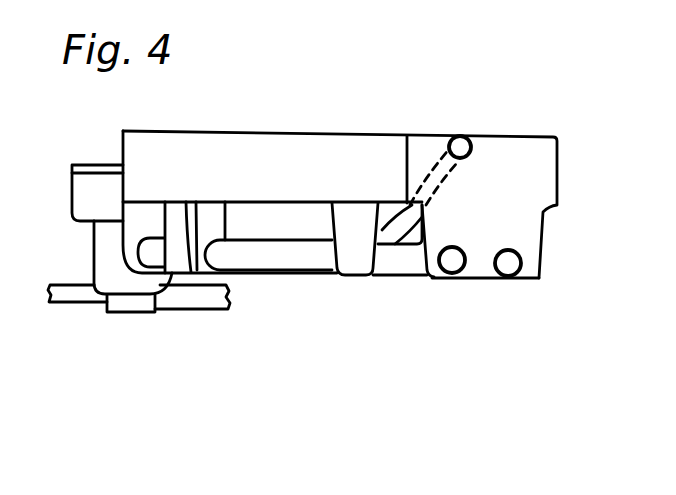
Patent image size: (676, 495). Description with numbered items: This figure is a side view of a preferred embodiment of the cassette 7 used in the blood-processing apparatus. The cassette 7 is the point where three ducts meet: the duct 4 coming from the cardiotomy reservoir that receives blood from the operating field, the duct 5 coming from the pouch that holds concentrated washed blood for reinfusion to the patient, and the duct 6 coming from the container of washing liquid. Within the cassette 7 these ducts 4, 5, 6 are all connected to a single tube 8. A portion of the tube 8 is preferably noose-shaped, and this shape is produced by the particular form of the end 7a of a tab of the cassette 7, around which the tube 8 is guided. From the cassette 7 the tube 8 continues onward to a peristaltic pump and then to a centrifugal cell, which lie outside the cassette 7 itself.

The cassette 7 is at (343, 134).
The end of tab 7a is at (103, 248).
The tube 8 is at (202, 300).
The duct 5 is at (465, 137).
The duct 4 is at (448, 277).
The duct 6 is at (510, 280).